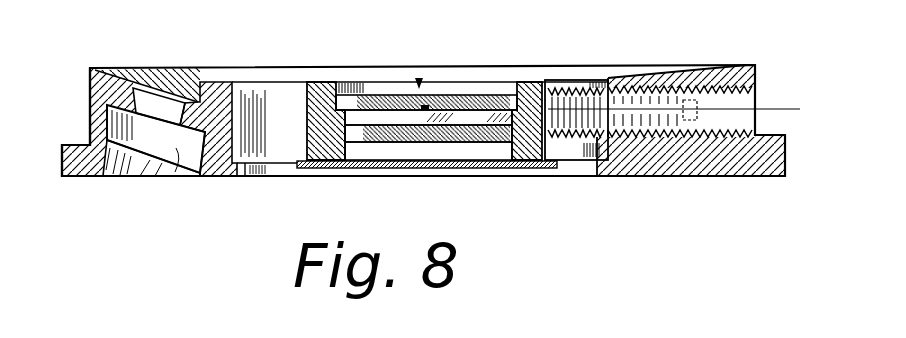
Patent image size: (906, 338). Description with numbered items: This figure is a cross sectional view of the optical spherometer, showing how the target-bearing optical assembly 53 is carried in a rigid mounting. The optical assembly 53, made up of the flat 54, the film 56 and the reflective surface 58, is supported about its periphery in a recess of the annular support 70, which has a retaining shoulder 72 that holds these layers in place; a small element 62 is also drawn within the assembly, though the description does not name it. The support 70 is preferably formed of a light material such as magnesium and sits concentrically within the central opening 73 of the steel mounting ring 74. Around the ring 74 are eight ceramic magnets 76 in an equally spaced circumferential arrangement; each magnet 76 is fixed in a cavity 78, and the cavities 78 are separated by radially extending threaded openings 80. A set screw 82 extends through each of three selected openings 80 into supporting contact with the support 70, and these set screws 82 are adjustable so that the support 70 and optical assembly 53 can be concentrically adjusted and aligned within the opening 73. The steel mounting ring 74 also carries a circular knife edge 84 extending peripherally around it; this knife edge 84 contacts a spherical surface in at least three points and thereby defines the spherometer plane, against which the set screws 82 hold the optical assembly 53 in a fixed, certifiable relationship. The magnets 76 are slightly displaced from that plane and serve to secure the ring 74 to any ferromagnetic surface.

The optical assembly 53 is at (419, 80).
The flat 54 is at (494, 98).
The film 56 is at (364, 122).
The reflective surface 58 is at (437, 133).
The contact element 62 is at (428, 104).
The annular support 70 is at (313, 86).
The retaining shoulder 72 is at (348, 88).
The central opening 73 is at (600, 148).
The steel mounting ring 74 is at (672, 152).
The ceramic magnet 76 is at (185, 158).
The cavity 78 is at (142, 170).
The threaded opening 80 is at (745, 103).
The set screw 82 is at (562, 88).
The circular knife edge 84 is at (62, 177).